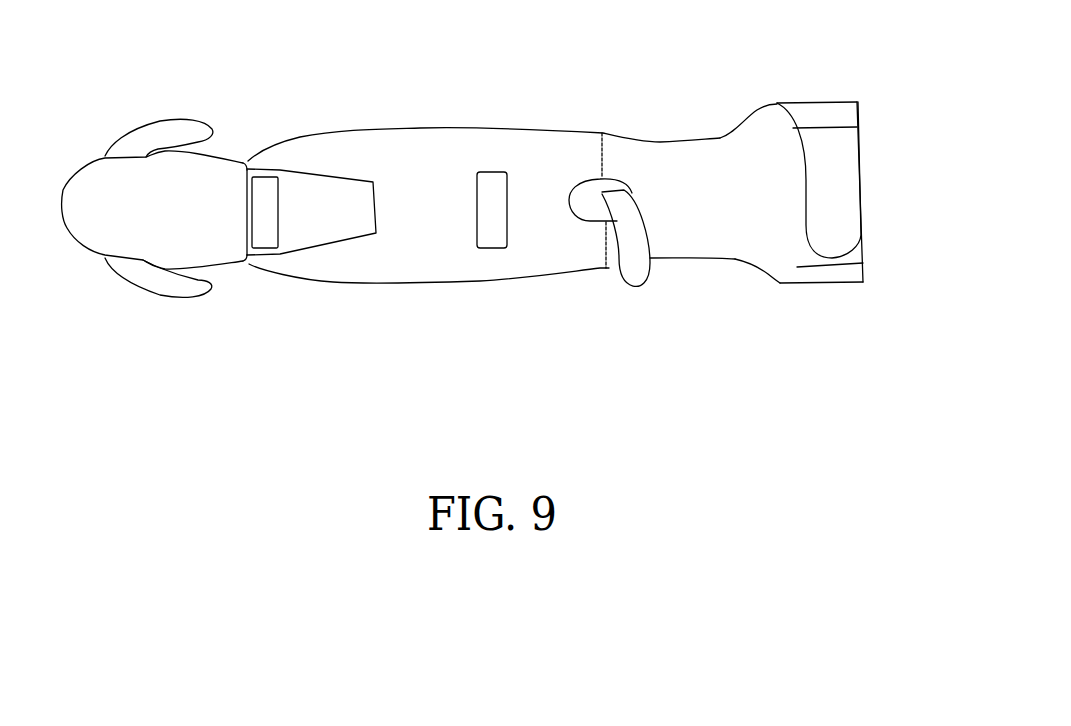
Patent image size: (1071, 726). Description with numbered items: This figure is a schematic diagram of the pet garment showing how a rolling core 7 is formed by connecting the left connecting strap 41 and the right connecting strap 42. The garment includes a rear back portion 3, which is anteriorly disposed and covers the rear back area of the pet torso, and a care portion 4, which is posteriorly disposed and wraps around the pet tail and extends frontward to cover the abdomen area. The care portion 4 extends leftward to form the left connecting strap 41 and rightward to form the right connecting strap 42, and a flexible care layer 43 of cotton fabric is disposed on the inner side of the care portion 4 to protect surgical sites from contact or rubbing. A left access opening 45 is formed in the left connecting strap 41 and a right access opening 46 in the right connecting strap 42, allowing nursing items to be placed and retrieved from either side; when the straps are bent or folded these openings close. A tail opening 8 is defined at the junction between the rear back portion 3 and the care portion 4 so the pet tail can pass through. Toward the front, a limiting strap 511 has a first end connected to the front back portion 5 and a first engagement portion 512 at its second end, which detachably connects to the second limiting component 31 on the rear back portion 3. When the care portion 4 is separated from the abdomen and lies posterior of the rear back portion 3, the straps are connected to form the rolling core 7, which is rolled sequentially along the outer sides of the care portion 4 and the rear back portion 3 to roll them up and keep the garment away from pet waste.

The rear back portion 3 is at (558, 157).
The second limiting component 31 is at (492, 207).
The care portion 4 is at (715, 157).
The left connecting strap 41 is at (852, 253).
The right connecting strap 42 is at (838, 157).
The flexible care layer 43 is at (800, 113).
The left access opening 45 is at (843, 267).
The right access opening 46 is at (828, 123).
The front back portion 5 is at (363, 265).
The limiting strap 511 is at (334, 195).
The first engagement portion 512 is at (268, 200).
The rolling core 7 is at (886, 191).
The tail opening 8 is at (592, 208).